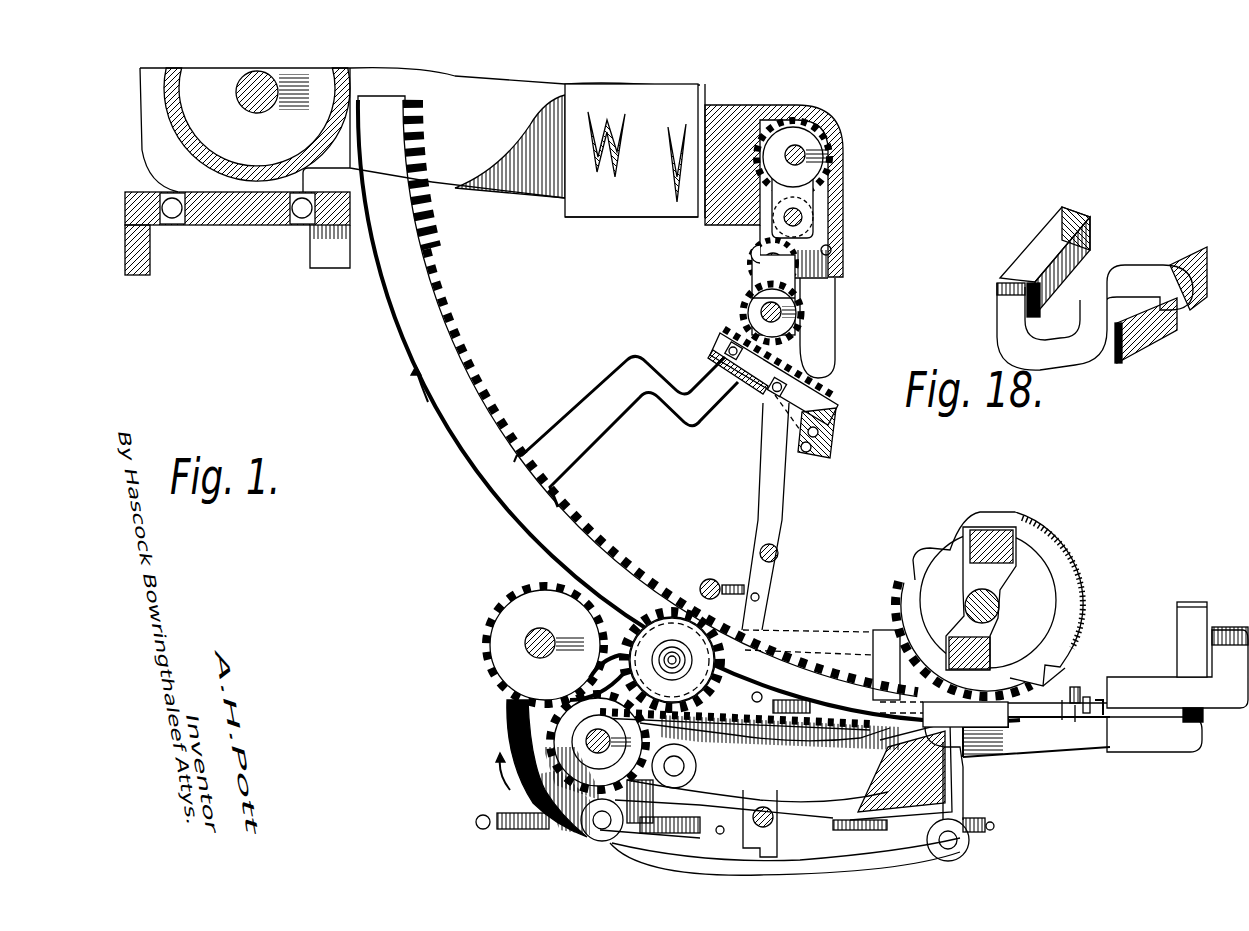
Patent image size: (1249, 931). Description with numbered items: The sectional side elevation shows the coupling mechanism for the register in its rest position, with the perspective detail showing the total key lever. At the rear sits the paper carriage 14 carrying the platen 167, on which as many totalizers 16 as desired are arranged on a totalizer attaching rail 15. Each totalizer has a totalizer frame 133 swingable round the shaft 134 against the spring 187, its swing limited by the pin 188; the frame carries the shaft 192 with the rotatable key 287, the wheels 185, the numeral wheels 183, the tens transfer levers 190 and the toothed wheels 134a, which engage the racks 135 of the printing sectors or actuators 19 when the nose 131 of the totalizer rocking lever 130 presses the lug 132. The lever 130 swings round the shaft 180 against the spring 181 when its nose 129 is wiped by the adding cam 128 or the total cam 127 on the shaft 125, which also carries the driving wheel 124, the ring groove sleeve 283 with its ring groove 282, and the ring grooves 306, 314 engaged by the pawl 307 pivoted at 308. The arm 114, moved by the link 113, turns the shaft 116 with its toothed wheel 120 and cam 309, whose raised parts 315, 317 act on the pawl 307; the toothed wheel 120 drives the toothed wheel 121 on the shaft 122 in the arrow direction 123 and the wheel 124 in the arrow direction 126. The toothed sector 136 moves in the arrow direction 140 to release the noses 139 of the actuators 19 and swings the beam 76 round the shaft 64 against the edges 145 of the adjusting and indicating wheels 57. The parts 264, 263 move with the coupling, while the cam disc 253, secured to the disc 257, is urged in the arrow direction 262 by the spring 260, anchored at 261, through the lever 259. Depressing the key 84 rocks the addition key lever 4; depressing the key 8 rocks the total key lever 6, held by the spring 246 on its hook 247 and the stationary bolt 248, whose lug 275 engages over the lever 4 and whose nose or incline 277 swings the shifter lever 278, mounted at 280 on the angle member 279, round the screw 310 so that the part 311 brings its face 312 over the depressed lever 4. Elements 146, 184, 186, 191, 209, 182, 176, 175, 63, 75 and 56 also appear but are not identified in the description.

In FIG. 1, the paper carriage 14 is at (237, 223).
In FIG. 1, the platen 167 is at (218, 163).
In FIG. 1, the rack teeth 146 is at (415, 203).
In FIG. 1, the totalizer 16 is at (587, 208).
In FIG. 1, the totalizer frame 133 is at (777, 192).
In FIG. 1, the printing sector 19 is at (450, 417).
In FIG. 1, the arrow direction 140 is at (413, 390).
In FIG. 1, the totalizer attaching rail 15 is at (730, 106).
In FIG. 1, the numeral wheel 183 is at (783, 121).
In FIG. 1, the shaft 184 is at (802, 150).
In FIG. 1, the shaft 134 is at (797, 147).
In FIG. 1, the shaft 192 is at (760, 265).
In FIG. 1, the lug 132 is at (752, 298).
In FIG. 1, the bearing 186 is at (760, 218).
In FIG. 1, the bearing 191 is at (745, 238).
In FIG. 1, the tens transfer lever 190 is at (755, 255).
In FIG. 1, the rotatable key 287 is at (842, 210).
In FIG. 1, the pin 188 is at (831, 248).
In FIG. 1, the spring 187 is at (838, 250).
In FIG. 1, the wheel 185 is at (805, 262).
In FIG. 1, the nose 131 is at (843, 288).
In FIG. 1, the toothed wheel 134a is at (807, 322).
In FIG. 1, the rack 135 is at (790, 380).
In FIG. 1, the spring 209 is at (745, 382).
In FIG. 1, the totalizer rocking lever 130 is at (822, 408).
In FIG. 1, the shaft 180 is at (774, 548).
In FIG. 1, the spring 181 is at (723, 572).
In FIG. 1, the nose 129 is at (772, 600).
In FIG. 1, the ring groove 282 is at (765, 620).
In FIG. 1, the link 182 is at (560, 443).
In FIG. 1, the shaft 122 is at (522, 640).
In FIG. 1, the toothed wheel 121 is at (500, 653).
In FIG. 1, the arrow direction 123 is at (518, 612).
In FIG. 1, the arrow direction 126 is at (620, 640).
In FIG. 1, the ring groove 306 is at (660, 615).
In FIG. 1, the pivot 308 is at (605, 635).
In FIG. 1, the pawl 307 is at (590, 683).
In FIG. 1, the toothed wheel 124 is at (745, 668).
In FIG. 1, the adding cam 128 is at (662, 650).
In FIG. 1, the ring groove sleeve 283 is at (667, 650).
In FIG. 1, the shaft 125 is at (673, 650).
In FIG. 1, the total cam 127 is at (679, 650).
In FIG. 1, the ring groove 314 is at (690, 640).
In FIG. 1, the toothed wheel 120 is at (587, 740).
In FIG. 1, the shaft 116 is at (590, 755).
In FIG. 1, the disc 257 is at (507, 720).
In FIG. 1, the cam disc 253 is at (517, 703).
In FIG. 1, the raised part 317 is at (585, 713).
In FIG. 1, the arrow direction 262 is at (500, 777).
In FIG. 1, the spring 260 is at (507, 817).
In FIG. 1, the spring anchorage 261 is at (475, 819).
In FIG. 1, the part 263 is at (575, 830).
In FIG. 1, the cam 309 is at (545, 830).
In FIG. 1, the raised part 315 is at (660, 772).
In FIG. 1, the arm 114 is at (670, 735).
In FIG. 1, the frame bar 176 is at (847, 860).
In FIG. 1, the lever 175 is at (777, 840).
In FIG. 1, the link 113 is at (797, 785).
In FIG. 1, the hook 247 is at (850, 830).
In FIG. 1, the lever 259 is at (805, 838).
In FIG. 1, the part 264 is at (957, 857).
In FIG. 1, the toothed sector 136 is at (947, 770).
In FIG. 1, the nose 139 is at (960, 757).
In FIG. 1, the spring 246 is at (993, 820).
In FIG. 1, the stationary bolt 248 is at (993, 827).
In FIG. 1, the attachment point 280 is at (900, 705).
In FIG. 1, the angle member 279 is at (905, 690).
In FIG. 1, the screw 310 is at (910, 685).
In FIG. 1, the lug 275 is at (1135, 703).
In FIG. 1, the gear 63 is at (896, 598).
In FIG. 1, the adjusting and indicating wheel 57 is at (1050, 497).
In FIG. 1, the shaft 64 is at (975, 600).
In FIG. 1, the beam 76 is at (983, 530).
In FIG. 1, the cam arm 75 is at (1003, 627).
In FIG. 1, the edge 145 is at (1047, 636).
In FIG. 1, the pawl 56 is at (1060, 667).
In FIG. 1, the total key lever 6 is at (1223, 708).
In FIG. 18, the total key lever 6 is at (1110, 230).
In FIG. 1, the key 8 is at (1234, 628).
In FIG. 1, the key 84 is at (1185, 602).
In FIG. 1, the addition key lever 4 is at (1187, 740).
In FIG. 18, the addition key lever 4 is at (1130, 338).
In FIG. 1, the nose 277 is at (1097, 708).
In FIG. 18, the nose 277 is at (1020, 270).
In FIG. 1, the shifter lever 278 is at (1075, 712).
In FIG. 18, the shifter lever 278 is at (1060, 222).
In FIG. 18, the part 311 is at (1133, 280).
In FIG. 18, the face 312 is at (1173, 312).